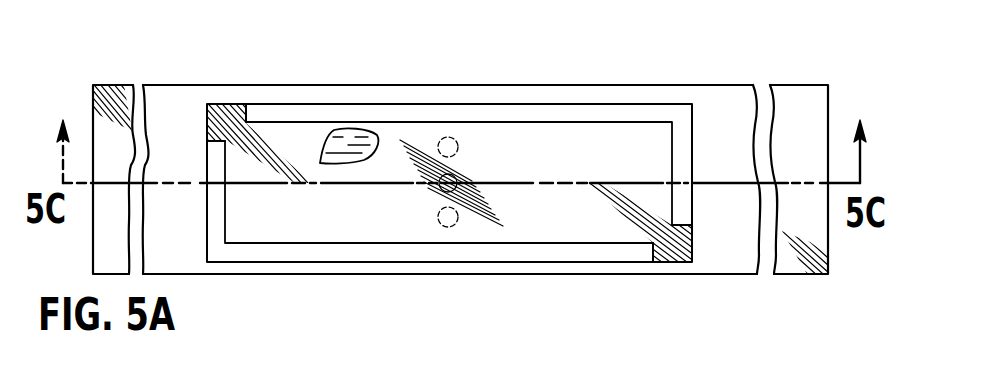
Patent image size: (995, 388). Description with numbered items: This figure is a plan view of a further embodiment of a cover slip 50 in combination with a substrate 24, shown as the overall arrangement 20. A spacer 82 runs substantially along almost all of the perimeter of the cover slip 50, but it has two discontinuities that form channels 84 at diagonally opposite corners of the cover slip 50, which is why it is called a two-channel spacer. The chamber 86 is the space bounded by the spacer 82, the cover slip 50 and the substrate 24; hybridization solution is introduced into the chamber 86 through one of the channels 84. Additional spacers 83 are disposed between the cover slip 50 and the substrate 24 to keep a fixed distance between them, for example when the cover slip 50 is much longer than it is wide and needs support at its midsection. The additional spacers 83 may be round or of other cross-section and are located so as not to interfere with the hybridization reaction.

The assembly 20 is at (311, 309).
The substrate 24 is at (718, 276).
The cover slip 50 is at (697, 114).
The spacer 82 is at (636, 123).
The additional spacers 83 is at (458, 147).
The channels 84 is at (220, 120).
The chamber 86 is at (350, 137).